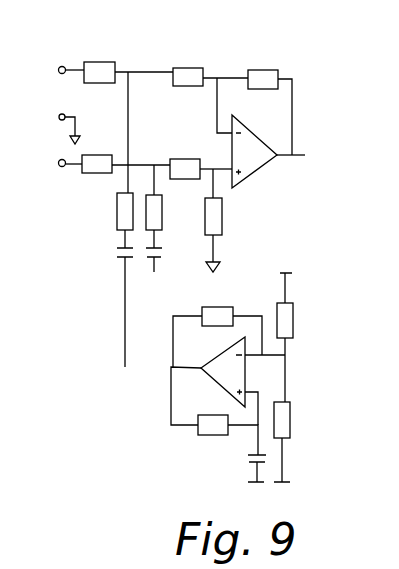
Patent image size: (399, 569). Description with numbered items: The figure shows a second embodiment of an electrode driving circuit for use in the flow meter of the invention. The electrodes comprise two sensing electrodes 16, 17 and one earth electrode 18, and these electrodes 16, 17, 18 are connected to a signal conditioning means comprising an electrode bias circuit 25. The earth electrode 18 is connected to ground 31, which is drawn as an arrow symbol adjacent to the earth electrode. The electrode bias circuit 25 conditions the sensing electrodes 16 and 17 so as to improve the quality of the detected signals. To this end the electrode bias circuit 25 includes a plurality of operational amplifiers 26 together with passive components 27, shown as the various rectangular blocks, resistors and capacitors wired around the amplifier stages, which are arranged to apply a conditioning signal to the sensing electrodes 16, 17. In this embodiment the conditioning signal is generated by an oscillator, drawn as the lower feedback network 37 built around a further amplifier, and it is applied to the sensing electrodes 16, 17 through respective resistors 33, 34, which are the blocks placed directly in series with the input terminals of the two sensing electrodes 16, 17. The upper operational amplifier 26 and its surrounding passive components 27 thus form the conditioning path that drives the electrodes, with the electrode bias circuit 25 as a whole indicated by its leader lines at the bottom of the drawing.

The sensing electrode 16 is at (60, 66).
The sensing electrode 17 is at (62, 168).
The earth electrode 18 is at (58, 118).
The electrode bias circuit 25 is at (0, 452).
The operational amplifier 26 is at (253, 163).
The passive component 27 is at (191, 70).
The ground 31 is at (80, 136).
The resistor 33 is at (108, 64).
The resistor 34 is at (126, 181).
The filter circuit 37 is at (246, 297).